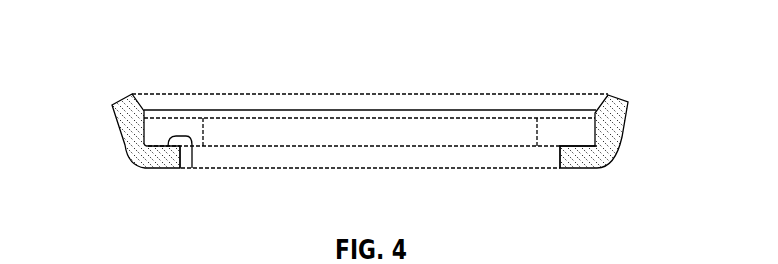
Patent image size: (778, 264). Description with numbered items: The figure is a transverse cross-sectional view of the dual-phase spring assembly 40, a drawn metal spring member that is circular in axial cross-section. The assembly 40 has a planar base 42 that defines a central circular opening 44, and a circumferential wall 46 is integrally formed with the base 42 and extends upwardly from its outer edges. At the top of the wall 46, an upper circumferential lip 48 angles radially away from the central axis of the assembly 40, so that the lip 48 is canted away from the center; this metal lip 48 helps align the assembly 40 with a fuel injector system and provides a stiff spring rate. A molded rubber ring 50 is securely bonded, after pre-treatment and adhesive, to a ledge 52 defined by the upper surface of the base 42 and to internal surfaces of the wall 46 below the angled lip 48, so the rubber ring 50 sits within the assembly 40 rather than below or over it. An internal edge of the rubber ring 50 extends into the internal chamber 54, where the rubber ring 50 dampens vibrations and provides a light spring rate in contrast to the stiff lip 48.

The dual-phase spring assembly 40 is at (327, 54).
The planar base 42 is at (583, 157).
The central circular opening 44 is at (405, 169).
The circumferential wall 46 is at (619, 138).
The upper circumferential lip 48 is at (120, 98).
The molded rubber ring 50 is at (195, 138).
The ledge 52 is at (196, 150).
The internal chamber 54 is at (417, 124).